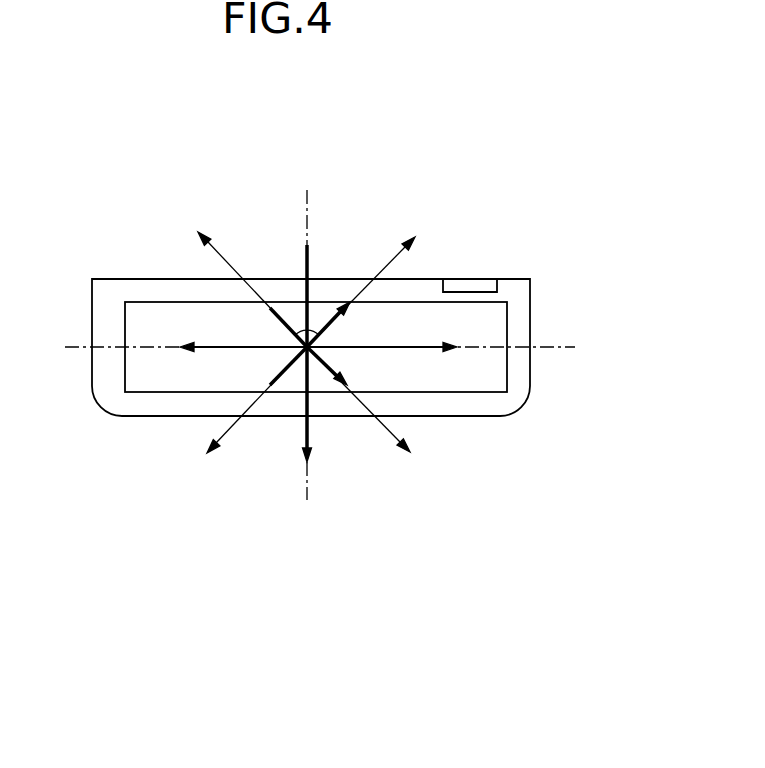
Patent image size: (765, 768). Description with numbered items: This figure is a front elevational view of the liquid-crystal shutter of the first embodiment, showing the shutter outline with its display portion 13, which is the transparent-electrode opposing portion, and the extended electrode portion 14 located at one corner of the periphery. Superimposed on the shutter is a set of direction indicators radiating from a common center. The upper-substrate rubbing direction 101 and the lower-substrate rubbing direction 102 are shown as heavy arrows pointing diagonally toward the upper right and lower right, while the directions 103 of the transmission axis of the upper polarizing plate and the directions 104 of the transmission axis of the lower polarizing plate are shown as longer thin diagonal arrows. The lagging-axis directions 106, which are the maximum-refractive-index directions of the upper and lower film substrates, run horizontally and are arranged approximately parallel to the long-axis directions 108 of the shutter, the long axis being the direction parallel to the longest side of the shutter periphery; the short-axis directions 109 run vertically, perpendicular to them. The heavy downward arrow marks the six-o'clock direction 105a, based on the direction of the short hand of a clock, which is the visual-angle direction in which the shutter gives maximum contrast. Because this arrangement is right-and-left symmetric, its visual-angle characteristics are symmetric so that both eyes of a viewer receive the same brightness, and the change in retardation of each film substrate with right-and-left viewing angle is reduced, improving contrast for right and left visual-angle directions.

The display portion 13 is at (145, 382).
The extended electrode portion 14 is at (463, 278).
The upper-substrate rubbing direction 101 is at (333, 317).
The lower-substrate rubbing direction 102 is at (333, 378).
The directions of the transmission axis of the upper polarizing plate 103 is at (223, 437).
The directions of the transmission axis of the lower polarizing plate 104 is at (224, 258).
The six-o'clock direction 105a is at (302, 438).
The lagging-axis directions 106 is at (432, 347).
The long-axis directions 108 is at (545, 345).
The short-axis directions 109 is at (307, 210).